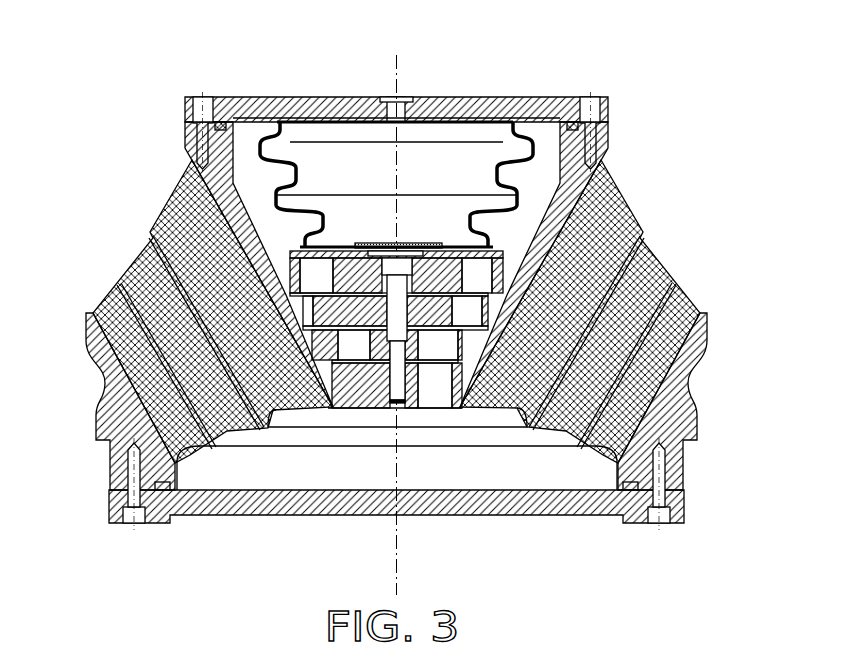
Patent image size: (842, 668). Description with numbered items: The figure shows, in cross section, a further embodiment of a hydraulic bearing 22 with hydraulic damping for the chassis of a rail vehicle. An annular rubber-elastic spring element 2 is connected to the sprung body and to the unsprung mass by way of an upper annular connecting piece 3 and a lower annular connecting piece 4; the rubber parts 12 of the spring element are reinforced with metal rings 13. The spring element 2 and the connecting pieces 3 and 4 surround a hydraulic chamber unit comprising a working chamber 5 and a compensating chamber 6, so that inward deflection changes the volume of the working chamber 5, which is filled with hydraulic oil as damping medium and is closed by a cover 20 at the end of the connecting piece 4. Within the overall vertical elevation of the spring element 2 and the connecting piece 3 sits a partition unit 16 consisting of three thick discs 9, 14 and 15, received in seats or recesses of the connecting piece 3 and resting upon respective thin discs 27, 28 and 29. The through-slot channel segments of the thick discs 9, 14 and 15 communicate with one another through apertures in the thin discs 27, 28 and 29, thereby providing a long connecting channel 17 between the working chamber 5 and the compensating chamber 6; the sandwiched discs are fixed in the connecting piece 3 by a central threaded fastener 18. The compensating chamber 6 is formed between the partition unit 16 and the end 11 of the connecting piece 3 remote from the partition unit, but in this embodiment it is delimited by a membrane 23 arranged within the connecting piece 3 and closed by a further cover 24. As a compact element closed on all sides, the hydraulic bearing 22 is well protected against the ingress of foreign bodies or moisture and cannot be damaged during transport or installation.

The spring element 2 is at (588, 377).
The connecting piece 3 is at (590, 172).
The connecting piece 4 is at (667, 423).
The working chamber 5 is at (533, 470).
The compensating chamber 6 is at (352, 190).
The disc 9 is at (458, 345).
The end of the connecting piece 11 is at (434, 392).
The rubber parts 12 is at (178, 340).
The metal rings 13 is at (185, 397).
The disc 14 is at (487, 310).
The disc 15 is at (585, 296).
The partition unit 16 is at (445, 208).
The connecting channel 17 is at (345, 360).
The central threaded fastener 18 is at (402, 382).
The cover 20 is at (263, 507).
The hydraulic bearing 22 is at (648, 88).
The membrane 23 is at (282, 158).
The cover 24 is at (278, 112).
The thin disc 27 is at (262, 300).
The thin disc 28 is at (270, 328).
The thin disc 29 is at (356, 345).